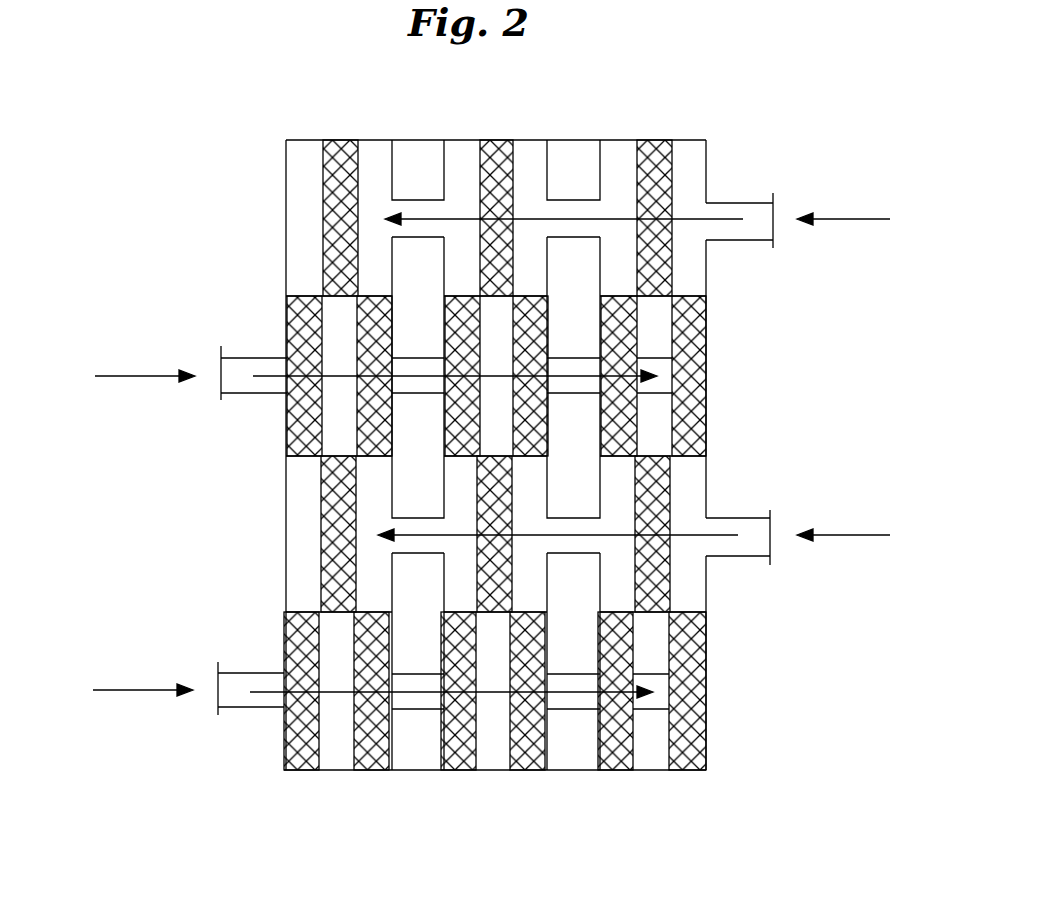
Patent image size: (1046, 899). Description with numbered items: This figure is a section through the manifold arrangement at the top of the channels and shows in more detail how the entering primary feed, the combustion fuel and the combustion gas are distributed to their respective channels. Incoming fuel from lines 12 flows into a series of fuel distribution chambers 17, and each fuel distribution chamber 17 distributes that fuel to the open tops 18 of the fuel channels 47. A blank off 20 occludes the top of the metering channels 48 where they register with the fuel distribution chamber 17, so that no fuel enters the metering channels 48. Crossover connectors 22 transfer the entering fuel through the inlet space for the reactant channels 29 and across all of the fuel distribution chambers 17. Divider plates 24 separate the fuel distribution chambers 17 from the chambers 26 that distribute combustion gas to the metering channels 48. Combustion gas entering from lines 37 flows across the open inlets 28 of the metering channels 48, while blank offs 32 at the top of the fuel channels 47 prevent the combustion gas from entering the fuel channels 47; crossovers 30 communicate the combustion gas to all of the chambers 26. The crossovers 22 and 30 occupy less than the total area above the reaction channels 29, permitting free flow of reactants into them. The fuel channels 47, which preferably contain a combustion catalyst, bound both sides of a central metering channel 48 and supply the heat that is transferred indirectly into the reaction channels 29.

The fuel lines 12 is at (832, 220).
The fuel distribution chamber 17 is at (303, 136).
The open tops of fuel channels 18 is at (508, 331).
The fuel channel 47 is at (625, 158).
The blank off 20 is at (513, 258).
The crossover connector 22 is at (422, 160).
The divider plate 24 is at (395, 305).
The combustion gas distribution chamber 26 is at (322, 415).
The open inlet of metering channel 28 is at (492, 407).
The metering channel 48 is at (538, 593).
The reaction channel 29 is at (405, 157).
The crossover 30 is at (418, 358).
The blank off 32 is at (633, 427).
The combustion gas lines 37 is at (165, 688).